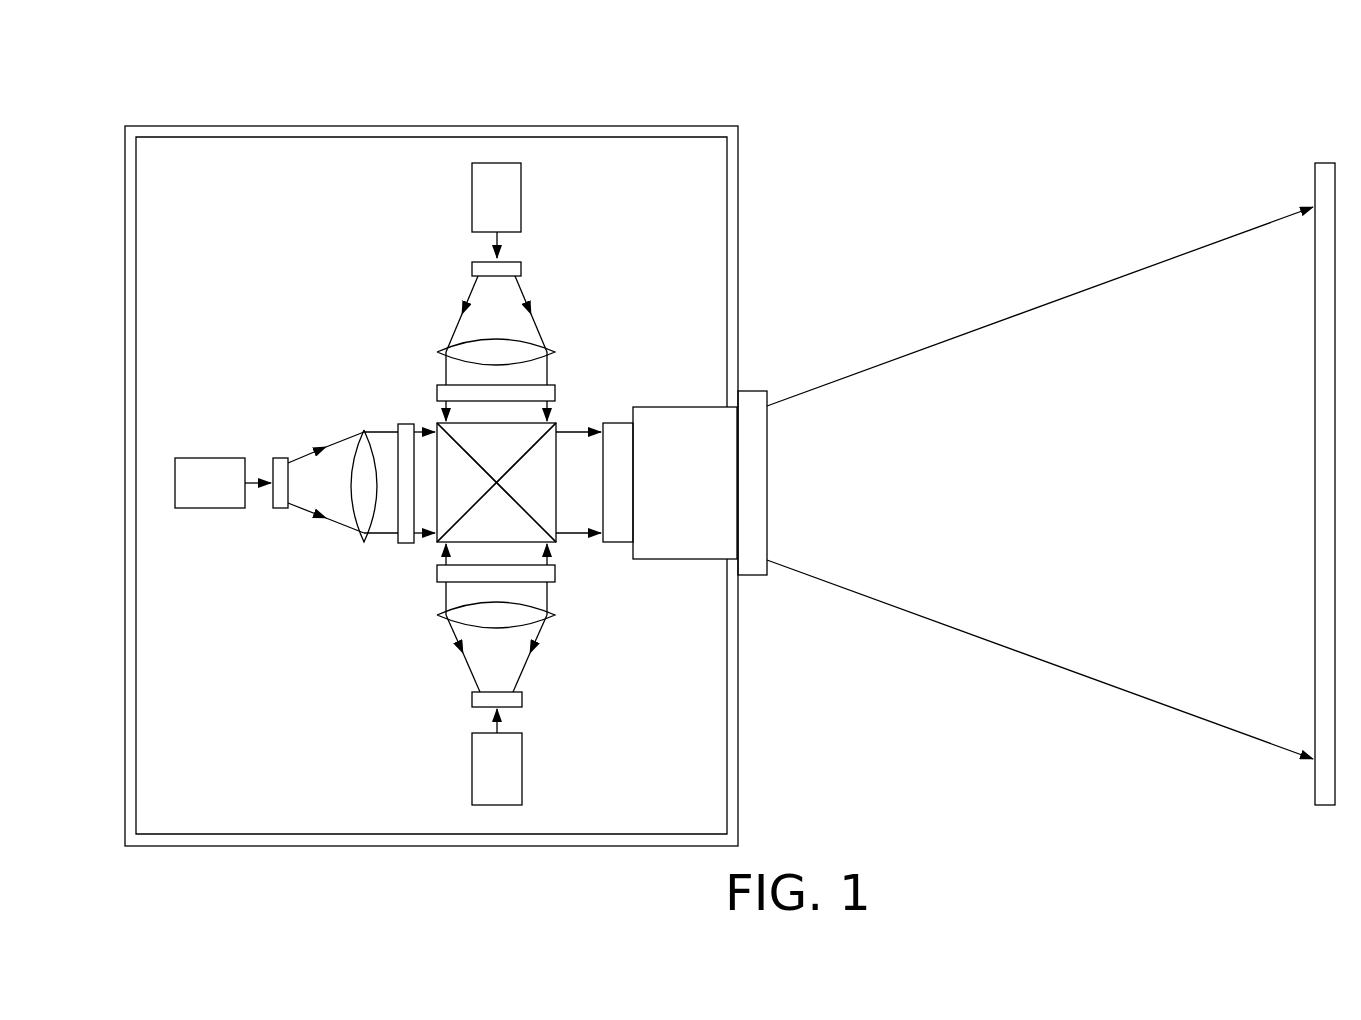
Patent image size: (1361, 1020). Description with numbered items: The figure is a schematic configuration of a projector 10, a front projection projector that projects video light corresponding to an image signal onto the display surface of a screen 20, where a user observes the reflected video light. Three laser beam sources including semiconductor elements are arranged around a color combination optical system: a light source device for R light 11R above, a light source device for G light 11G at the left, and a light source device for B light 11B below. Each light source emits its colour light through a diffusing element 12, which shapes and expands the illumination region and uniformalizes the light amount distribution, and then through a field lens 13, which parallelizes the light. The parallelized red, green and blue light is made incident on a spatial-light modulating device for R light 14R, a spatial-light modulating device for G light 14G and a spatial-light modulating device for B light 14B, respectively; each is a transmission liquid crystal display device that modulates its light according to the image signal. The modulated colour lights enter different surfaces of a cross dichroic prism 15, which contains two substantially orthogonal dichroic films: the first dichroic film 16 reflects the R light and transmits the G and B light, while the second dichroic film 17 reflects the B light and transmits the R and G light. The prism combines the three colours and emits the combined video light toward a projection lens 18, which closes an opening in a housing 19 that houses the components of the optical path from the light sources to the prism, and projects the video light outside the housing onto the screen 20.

The projector 10 is at (220, 96).
The light source device for R light 11R is at (507, 183).
The light source device for G light 11G is at (192, 458).
The light source device for B light 11B is at (482, 775).
The diffusing element 12 is at (515, 268).
The field lens 13 is at (547, 351).
The spatial-light modulating device for R light 14R is at (553, 392).
The spatial-light modulating device for G light 14G is at (407, 428).
The spatial-light modulating device for B light 14B is at (438, 576).
The cross dichroic prism 15 is at (428, 550).
The first dichroic film 16 is at (548, 528).
The second dichroic film 17 is at (535, 446).
The projection lens 18 is at (750, 398).
The housing 19 is at (735, 791).
The screen 20 is at (1325, 163).